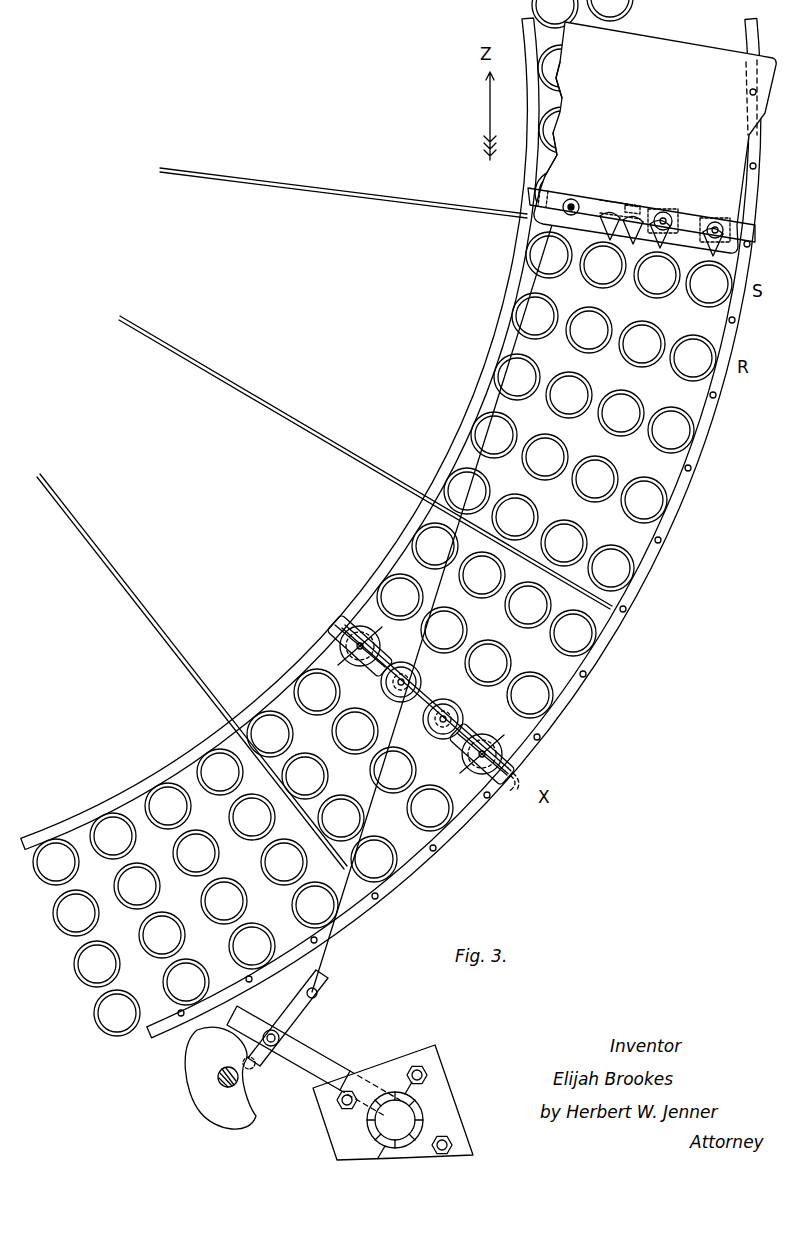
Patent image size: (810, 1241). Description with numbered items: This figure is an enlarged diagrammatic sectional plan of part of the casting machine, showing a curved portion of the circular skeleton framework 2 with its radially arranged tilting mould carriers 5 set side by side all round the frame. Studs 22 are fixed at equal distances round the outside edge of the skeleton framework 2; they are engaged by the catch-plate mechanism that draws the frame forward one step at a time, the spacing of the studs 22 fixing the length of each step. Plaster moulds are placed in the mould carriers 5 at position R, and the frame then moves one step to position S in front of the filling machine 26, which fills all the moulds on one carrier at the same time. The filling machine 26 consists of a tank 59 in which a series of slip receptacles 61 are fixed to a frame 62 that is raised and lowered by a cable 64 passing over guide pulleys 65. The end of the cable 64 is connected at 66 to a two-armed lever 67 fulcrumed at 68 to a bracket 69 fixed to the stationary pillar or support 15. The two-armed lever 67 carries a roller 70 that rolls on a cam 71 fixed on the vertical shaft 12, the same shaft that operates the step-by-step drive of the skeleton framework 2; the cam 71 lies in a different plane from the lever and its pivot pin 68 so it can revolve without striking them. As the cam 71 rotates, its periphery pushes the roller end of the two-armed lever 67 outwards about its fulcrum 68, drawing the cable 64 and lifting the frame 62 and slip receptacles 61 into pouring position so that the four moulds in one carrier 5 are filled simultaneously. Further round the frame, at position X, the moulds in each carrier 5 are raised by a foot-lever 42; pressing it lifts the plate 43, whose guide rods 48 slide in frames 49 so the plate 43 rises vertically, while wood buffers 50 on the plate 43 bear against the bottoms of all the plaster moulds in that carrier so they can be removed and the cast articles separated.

The skeleton framework 2 is at (232, 718).
The mould carrier 5 is at (715, 40).
The vertical shaft 12 is at (228, 1078).
The stationary pillar or support 15 is at (393, 1102).
The stud 22 is at (755, 167).
The filling machine 26 is at (655, 137).
The foot-lever 42 is at (511, 793).
The plate 43 is at (405, 702).
The guide rod 48 is at (352, 654).
The frame 49 is at (380, 655).
The wood buffer 50 is at (443, 710).
The tank 59 is at (646, 45).
The slip receptacle 61 is at (710, 226).
The frame 62 is at (661, 234).
The cable 64 is at (563, 212).
The guide pulley 65 is at (602, 197).
The cable connection 66 is at (318, 994).
The two-armed lever 67 is at (292, 1022).
The fulcrum pivot pin 68 is at (280, 1039).
The bracket 69 is at (326, 1075).
The roller 70 is at (252, 1070).
The cam 71 is at (220, 1078).